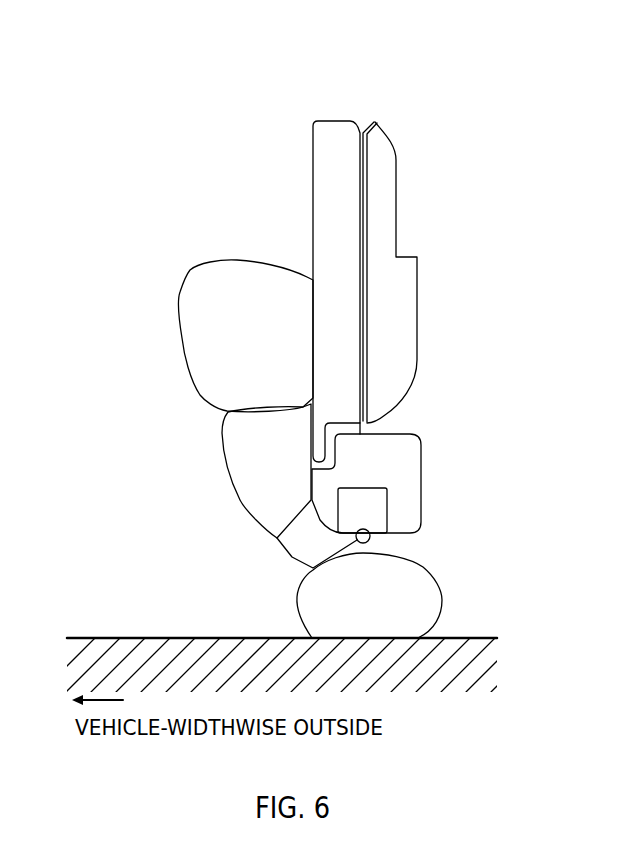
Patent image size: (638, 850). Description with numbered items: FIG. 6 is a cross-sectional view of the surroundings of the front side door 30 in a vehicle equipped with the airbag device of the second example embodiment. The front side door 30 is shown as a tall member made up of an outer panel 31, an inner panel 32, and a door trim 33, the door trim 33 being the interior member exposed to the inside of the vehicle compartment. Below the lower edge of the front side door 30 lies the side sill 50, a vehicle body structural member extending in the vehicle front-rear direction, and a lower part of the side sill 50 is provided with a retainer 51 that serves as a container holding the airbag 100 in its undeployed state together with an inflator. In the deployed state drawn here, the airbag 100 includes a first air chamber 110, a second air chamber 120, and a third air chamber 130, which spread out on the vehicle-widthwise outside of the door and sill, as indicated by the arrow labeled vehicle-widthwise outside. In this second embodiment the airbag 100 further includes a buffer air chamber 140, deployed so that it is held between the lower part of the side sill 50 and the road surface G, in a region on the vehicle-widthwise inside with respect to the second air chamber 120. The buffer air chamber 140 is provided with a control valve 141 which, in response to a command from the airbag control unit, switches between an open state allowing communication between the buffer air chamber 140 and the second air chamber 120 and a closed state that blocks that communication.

The front side door 30 is at (320, 104).
The outer panel 31 is at (313, 163).
The inner panel 32 is at (360, 182).
The door trim 33 is at (396, 208).
The side sill 50 is at (421, 472).
The retainer 51 is at (386, 515).
The airbag 100 is at (189, 239).
The first air chamber 110 is at (225, 447).
The second air chamber 120 is at (290, 556).
The third air chamber 130 is at (189, 271).
The buffer air chamber 140 is at (442, 609).
The control valve 141 is at (363, 536).
The road surface G is at (145, 638).